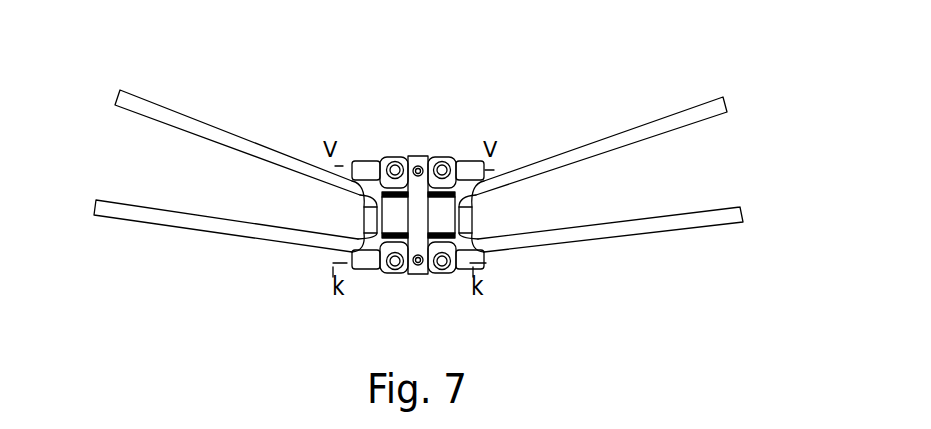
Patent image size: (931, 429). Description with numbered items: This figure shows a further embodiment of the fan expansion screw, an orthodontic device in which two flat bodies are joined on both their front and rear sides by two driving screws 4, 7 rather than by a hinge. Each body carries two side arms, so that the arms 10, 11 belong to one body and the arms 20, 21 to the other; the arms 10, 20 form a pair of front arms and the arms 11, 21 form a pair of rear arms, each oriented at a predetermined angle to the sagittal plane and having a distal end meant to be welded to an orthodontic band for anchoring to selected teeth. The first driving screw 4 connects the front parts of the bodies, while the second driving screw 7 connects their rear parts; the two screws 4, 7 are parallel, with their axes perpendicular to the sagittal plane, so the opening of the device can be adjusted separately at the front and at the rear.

The side arm 10 is at (148, 112).
The side arm 11 is at (113, 210).
The side arm 20 is at (696, 112).
The side arm 21 is at (698, 215).
The driving screw 4 is at (372, 152).
The second driving screw 7 is at (452, 280).